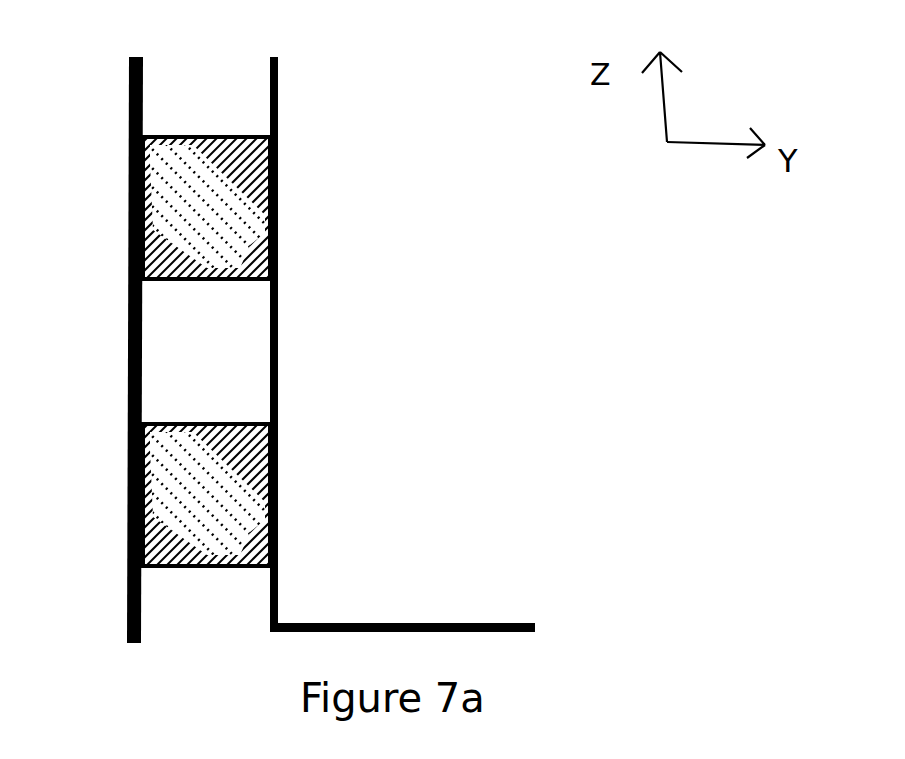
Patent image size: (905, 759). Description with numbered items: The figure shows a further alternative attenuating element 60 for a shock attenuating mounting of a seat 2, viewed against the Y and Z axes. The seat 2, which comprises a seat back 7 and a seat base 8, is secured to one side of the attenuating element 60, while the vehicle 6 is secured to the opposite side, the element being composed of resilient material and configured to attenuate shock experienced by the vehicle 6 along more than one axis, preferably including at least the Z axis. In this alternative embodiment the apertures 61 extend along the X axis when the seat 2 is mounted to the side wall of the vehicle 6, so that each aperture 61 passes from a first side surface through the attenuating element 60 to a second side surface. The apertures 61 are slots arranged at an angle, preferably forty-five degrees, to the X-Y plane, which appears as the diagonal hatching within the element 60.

The seat 2 is at (377, 575).
The vehicle 6 is at (127, 620).
The seat back 7 is at (278, 355).
The seat base 8 is at (510, 623).
The attenuating element 60 is at (158, 262).
The apertures 61 is at (155, 182).